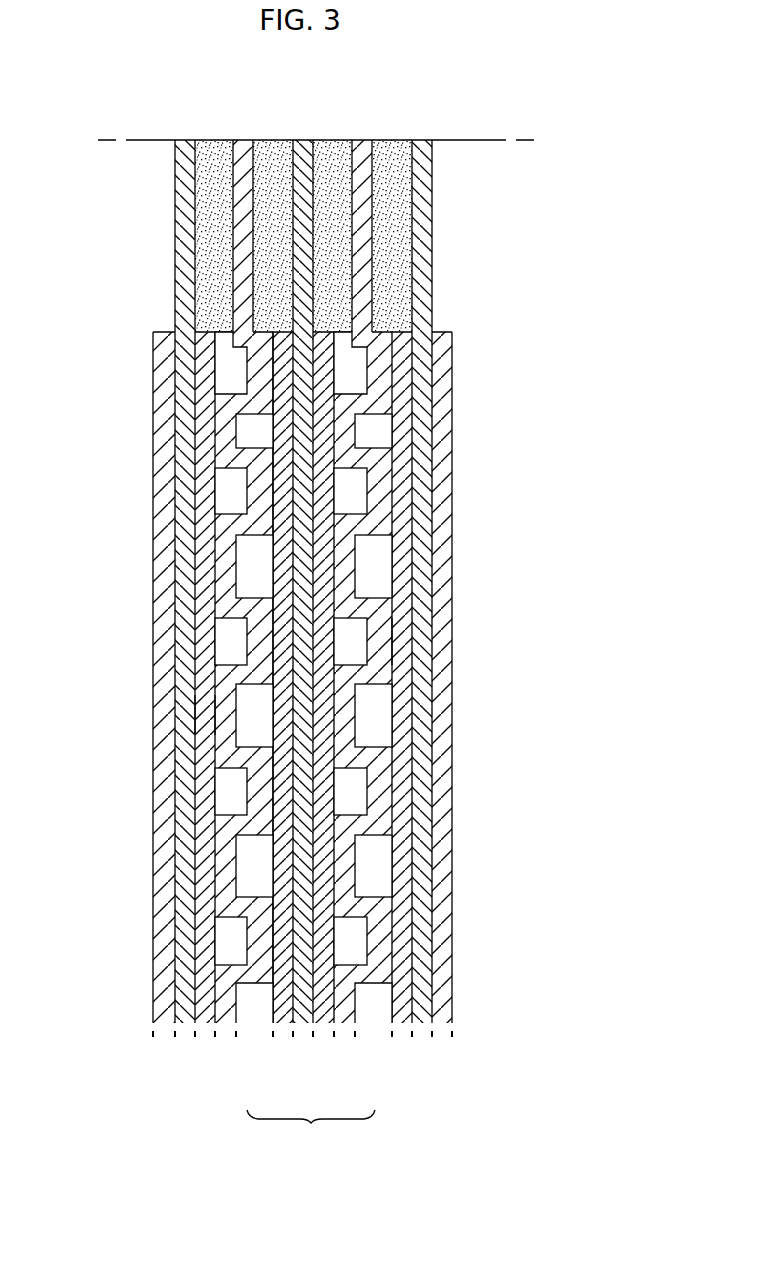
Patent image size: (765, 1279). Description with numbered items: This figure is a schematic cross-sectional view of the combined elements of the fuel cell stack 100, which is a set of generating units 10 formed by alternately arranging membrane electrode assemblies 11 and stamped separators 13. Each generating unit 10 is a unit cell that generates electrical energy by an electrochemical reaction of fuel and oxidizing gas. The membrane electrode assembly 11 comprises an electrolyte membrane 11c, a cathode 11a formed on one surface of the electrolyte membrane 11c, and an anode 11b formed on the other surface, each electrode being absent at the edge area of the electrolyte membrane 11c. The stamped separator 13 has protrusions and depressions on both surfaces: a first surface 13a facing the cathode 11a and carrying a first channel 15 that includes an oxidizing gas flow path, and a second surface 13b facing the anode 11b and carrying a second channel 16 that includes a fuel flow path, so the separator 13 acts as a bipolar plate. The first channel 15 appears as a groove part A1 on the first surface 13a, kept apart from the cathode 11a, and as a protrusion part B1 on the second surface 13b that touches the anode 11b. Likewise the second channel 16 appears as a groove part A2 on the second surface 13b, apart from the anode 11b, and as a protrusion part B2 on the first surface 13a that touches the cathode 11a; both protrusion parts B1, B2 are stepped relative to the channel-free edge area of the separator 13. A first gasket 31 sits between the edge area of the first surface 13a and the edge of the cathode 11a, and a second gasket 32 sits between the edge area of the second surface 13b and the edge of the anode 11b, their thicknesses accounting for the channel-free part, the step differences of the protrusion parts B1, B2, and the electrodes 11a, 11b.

The fuel cell stack 100 is at (316, 62).
The generating unit 10 is at (311, 1127).
The membrane electrode assembly 11 is at (309, 1048).
The cathode 11a is at (203, 870).
The anode 11b is at (167, 892).
The electrolyte membrane 11c is at (185, 917).
The stamped separator 13 is at (253, 1048).
The first surface 13a is at (232, 267).
The second surface 13b is at (372, 265).
The first channel 15 is at (228, 490).
The second channel 16 is at (373, 567).
The first gasket 31 is at (212, 140).
The second gasket 32 is at (269, 140).
The groove part A1 is at (247, 651).
The groove part A2 is at (355, 714).
The protrusion part B1 is at (393, 636).
The protrusion part B2 is at (200, 717).